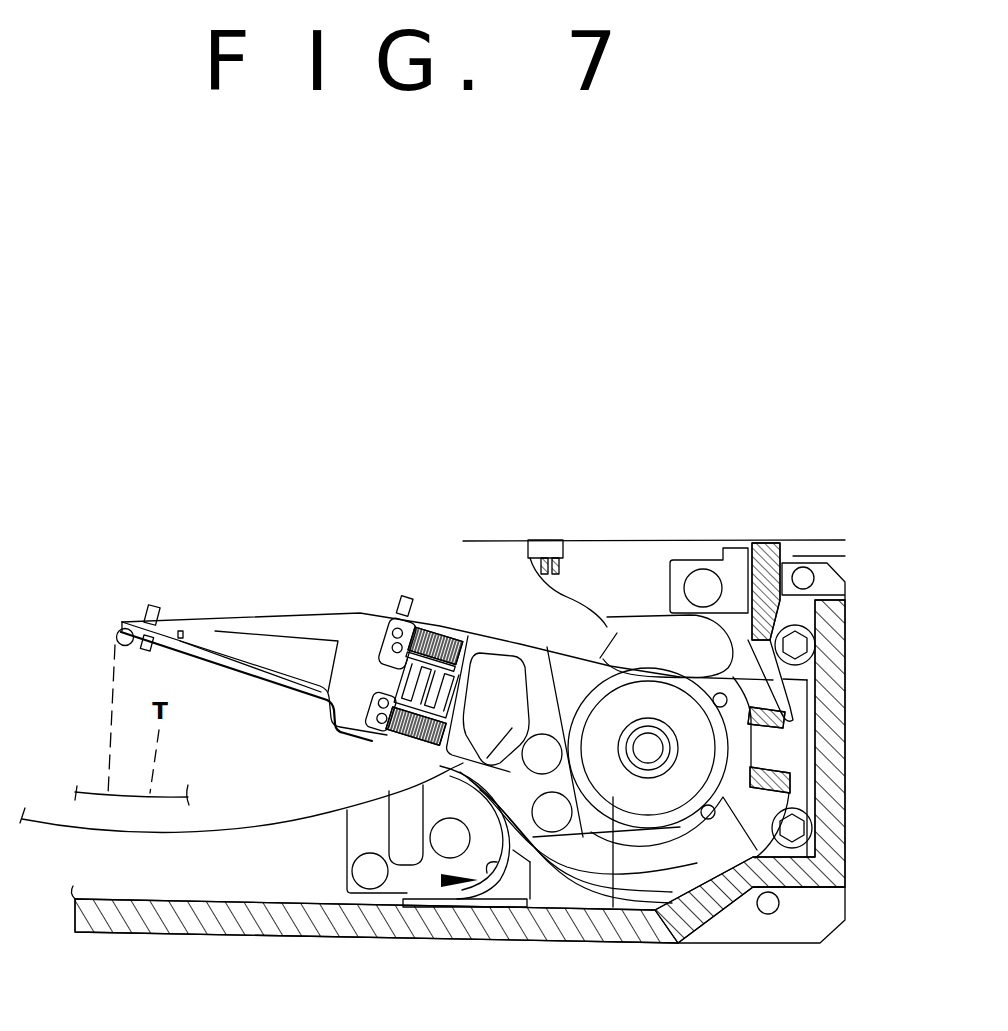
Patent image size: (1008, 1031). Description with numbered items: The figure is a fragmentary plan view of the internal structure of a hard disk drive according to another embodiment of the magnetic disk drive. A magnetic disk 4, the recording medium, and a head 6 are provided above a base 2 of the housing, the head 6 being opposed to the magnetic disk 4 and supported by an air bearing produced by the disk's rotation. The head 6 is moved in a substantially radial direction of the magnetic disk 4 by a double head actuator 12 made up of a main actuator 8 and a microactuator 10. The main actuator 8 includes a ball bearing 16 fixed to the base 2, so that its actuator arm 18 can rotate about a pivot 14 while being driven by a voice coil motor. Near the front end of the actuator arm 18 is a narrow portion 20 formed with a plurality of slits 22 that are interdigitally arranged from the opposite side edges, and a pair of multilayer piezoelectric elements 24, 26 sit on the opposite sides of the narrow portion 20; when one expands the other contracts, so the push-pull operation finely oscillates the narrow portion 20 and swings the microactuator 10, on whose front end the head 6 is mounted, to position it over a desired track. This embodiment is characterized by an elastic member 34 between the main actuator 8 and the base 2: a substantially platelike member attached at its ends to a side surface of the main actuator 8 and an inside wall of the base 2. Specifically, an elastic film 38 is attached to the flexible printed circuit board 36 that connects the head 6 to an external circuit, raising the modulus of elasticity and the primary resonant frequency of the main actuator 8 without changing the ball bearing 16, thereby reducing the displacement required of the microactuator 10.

The base 2 is at (310, 940).
The magnetic disk 4 is at (63, 828).
The head 6 is at (117, 637).
The main actuator 8 is at (520, 612).
The microactuator 10 is at (297, 567).
The double head actuator 12 is at (343, 455).
The pivot 14 is at (655, 750).
The ball bearing 16 is at (623, 795).
The actuator arm 18 is at (503, 645).
The narrow portion 20 is at (363, 737).
The slits 22 is at (380, 655).
The multilayer piezoelectric element 24 is at (387, 762).
The multilayer piezoelectric element 26 is at (440, 627).
The elastic member 34 is at (441, 880).
The flexible printed circuit board 36 is at (445, 936).
The elastic film 38 is at (490, 875).